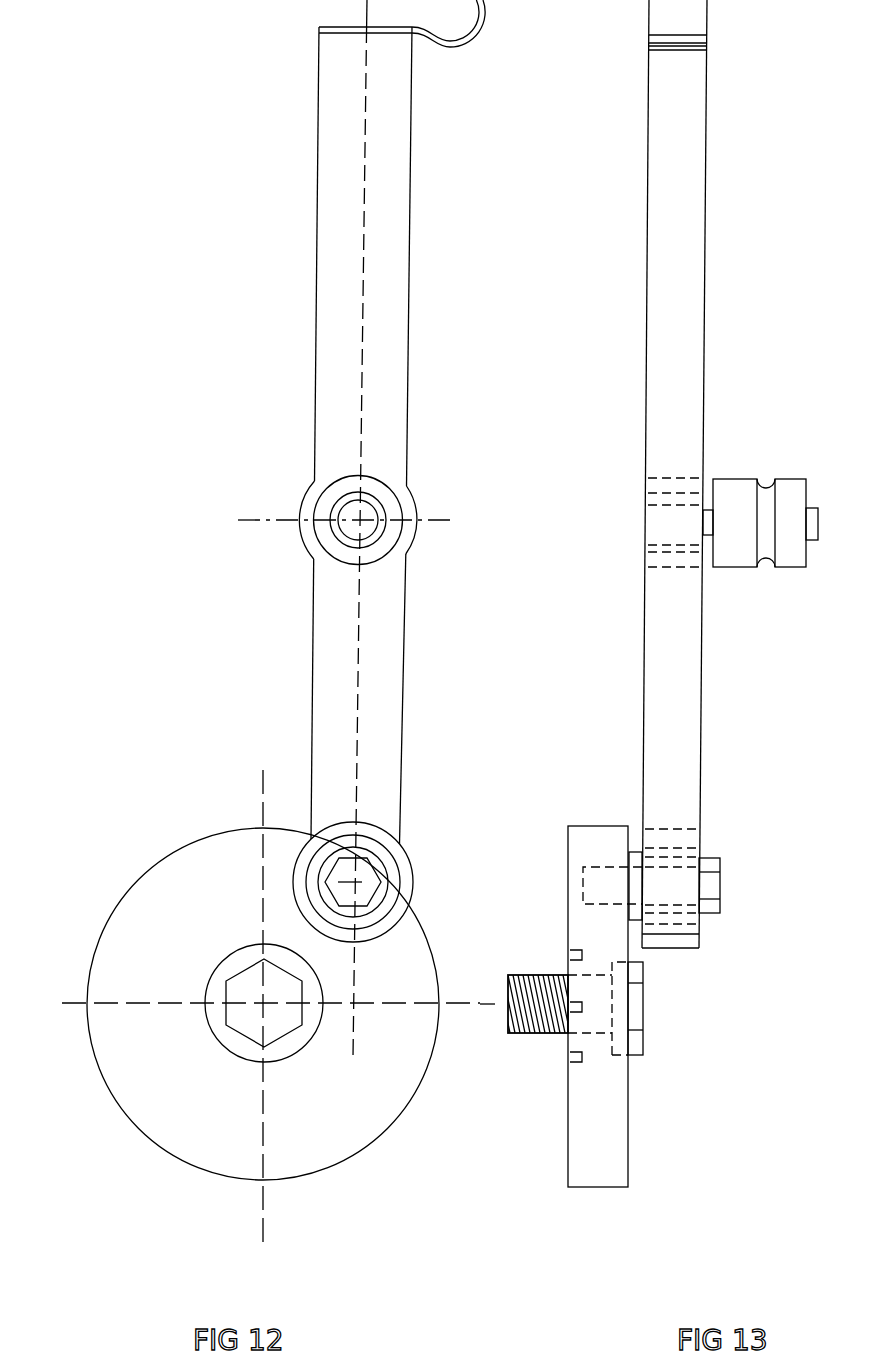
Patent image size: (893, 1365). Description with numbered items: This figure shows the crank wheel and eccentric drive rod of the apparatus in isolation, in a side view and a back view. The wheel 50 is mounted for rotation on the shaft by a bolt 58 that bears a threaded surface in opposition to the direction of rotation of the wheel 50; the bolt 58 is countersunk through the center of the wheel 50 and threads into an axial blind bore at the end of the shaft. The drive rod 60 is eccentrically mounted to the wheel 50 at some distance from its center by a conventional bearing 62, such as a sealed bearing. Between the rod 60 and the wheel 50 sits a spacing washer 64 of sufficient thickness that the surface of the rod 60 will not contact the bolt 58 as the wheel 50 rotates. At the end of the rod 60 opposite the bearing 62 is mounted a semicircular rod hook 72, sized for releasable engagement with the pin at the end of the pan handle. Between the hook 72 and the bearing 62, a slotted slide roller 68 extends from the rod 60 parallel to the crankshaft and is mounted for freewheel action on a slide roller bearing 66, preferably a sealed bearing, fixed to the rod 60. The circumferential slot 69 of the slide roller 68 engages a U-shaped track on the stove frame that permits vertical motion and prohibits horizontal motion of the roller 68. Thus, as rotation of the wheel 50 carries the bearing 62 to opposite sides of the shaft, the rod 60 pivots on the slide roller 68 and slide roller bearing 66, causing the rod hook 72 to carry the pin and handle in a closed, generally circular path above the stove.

In FIG. 12, the wheel 50 is at (323, 1130).
In FIG. 13, the wheel 50 is at (610, 1148).
In FIG. 12, the bolt 58 is at (255, 1031).
In FIG. 13, the bolt 58 is at (512, 975).
In FIG. 12, the drive rod 60 is at (353, 272).
In FIG. 13, the drive rod 60 is at (688, 277).
In FIG. 12, the bearing 62 is at (362, 880).
In FIG. 13, the bearing 62 is at (705, 857).
In FIG. 13, the spacing washer 64 is at (637, 852).
In FIG. 13, the slide roller bearing 66 is at (645, 524).
In FIG. 12, the slide roller 68 is at (325, 505).
In FIG. 13, the slide roller 68 is at (746, 537).
In FIG. 13, the circumferential slot 69 is at (765, 562).
In FIG. 12, the rod hook 72 is at (468, 42).
In FIG. 13, the rod hook 72 is at (707, 15).